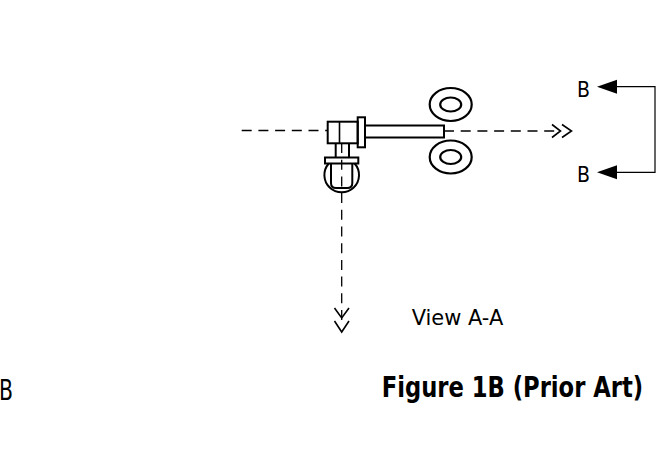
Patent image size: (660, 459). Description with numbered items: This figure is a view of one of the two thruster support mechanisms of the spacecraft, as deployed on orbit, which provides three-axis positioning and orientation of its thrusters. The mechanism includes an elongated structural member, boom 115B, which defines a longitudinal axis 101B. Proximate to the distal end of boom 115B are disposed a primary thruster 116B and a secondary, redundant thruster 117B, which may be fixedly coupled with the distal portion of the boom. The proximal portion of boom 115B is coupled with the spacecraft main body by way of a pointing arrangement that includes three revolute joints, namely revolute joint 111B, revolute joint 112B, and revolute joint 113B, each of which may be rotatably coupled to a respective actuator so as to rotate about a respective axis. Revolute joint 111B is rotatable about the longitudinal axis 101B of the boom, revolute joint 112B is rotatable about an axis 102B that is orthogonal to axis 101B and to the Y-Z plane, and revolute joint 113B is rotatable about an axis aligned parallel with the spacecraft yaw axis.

The longitudinal axis 101B is at (508, 144).
The axis 102B is at (341, 254).
The revolute joint 111B is at (362, 116).
The revolute joint 112B is at (326, 161).
The revolute joint 113B is at (323, 180).
The boom 115B is at (395, 130).
The primary thruster 116B is at (449, 174).
The secondary thruster 117B is at (458, 88).